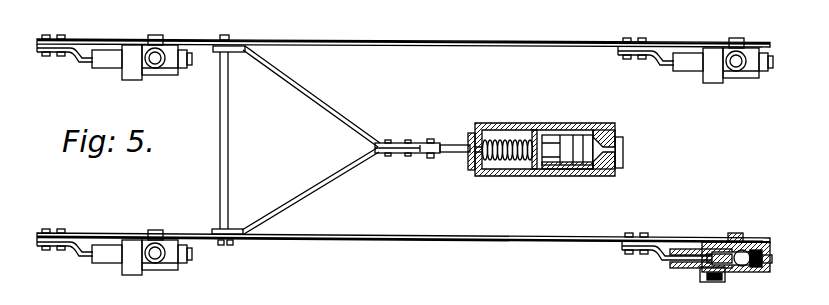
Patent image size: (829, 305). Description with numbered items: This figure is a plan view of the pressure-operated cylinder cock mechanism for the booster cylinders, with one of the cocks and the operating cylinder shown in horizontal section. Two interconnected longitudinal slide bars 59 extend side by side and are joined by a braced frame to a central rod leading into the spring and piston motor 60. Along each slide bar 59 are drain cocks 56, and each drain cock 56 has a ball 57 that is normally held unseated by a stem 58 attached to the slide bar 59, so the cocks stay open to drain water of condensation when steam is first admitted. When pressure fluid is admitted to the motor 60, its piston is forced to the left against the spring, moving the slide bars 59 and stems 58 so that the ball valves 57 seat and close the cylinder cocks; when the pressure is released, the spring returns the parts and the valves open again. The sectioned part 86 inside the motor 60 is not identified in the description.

The drain cock 56 is at (131, 52).
The ball 57 is at (744, 252).
The stem 58 is at (80, 58).
The longitudinal slide bar 59 is at (423, 46).
The spring and piston motor 60 is at (545, 148).
The valve body 86 is at (592, 168).